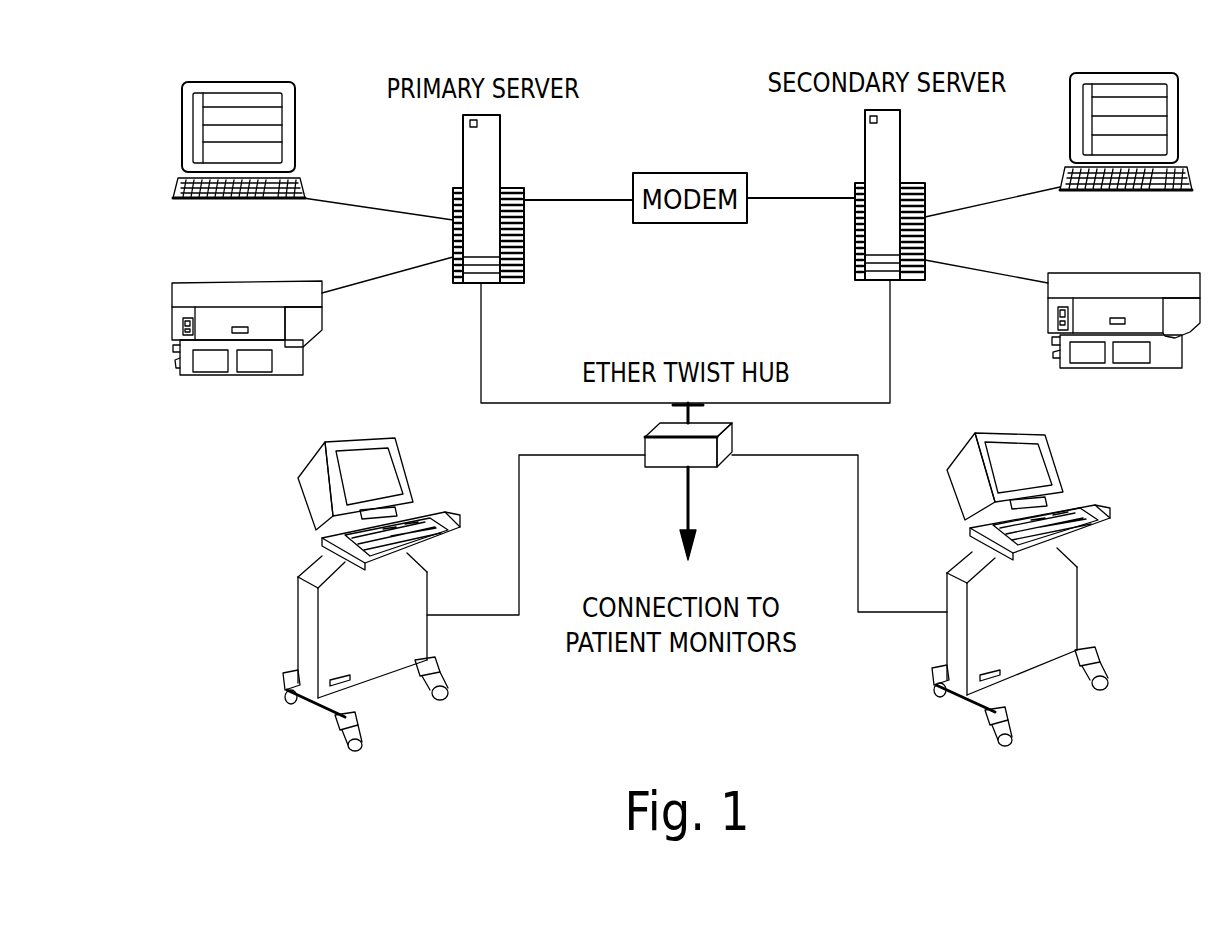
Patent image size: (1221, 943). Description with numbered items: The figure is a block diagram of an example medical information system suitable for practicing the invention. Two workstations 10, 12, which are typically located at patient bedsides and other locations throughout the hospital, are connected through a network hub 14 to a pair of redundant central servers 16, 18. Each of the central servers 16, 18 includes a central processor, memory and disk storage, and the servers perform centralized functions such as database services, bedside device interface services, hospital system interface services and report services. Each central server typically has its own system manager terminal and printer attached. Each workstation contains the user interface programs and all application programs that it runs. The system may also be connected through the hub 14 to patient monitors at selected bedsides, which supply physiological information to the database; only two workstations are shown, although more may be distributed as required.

The workstation 10 is at (283, 510).
The workstation 12 is at (1140, 537).
The network hub 14 is at (705, 467).
The central server 16 is at (500, 148).
The central server 18 is at (865, 133).